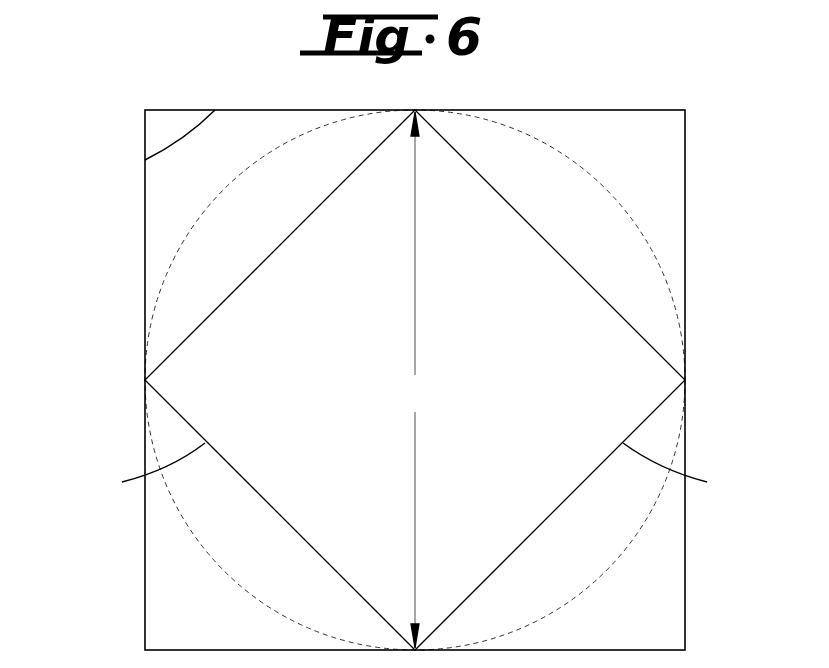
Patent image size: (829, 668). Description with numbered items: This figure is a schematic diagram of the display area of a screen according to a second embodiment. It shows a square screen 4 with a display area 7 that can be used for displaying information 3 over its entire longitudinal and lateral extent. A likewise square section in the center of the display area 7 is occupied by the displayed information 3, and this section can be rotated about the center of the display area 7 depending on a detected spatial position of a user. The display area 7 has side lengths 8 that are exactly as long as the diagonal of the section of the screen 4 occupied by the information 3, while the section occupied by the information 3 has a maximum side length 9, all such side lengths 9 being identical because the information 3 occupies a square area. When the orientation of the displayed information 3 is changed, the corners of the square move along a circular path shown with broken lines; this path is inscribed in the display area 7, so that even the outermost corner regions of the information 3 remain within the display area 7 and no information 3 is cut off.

The information 3 is at (521, 250).
The screen 4 is at (686, 210).
The display area 7 is at (648, 157).
The side lengths 8 is at (145, 160).
The maximum side length 9 is at (413, 474).